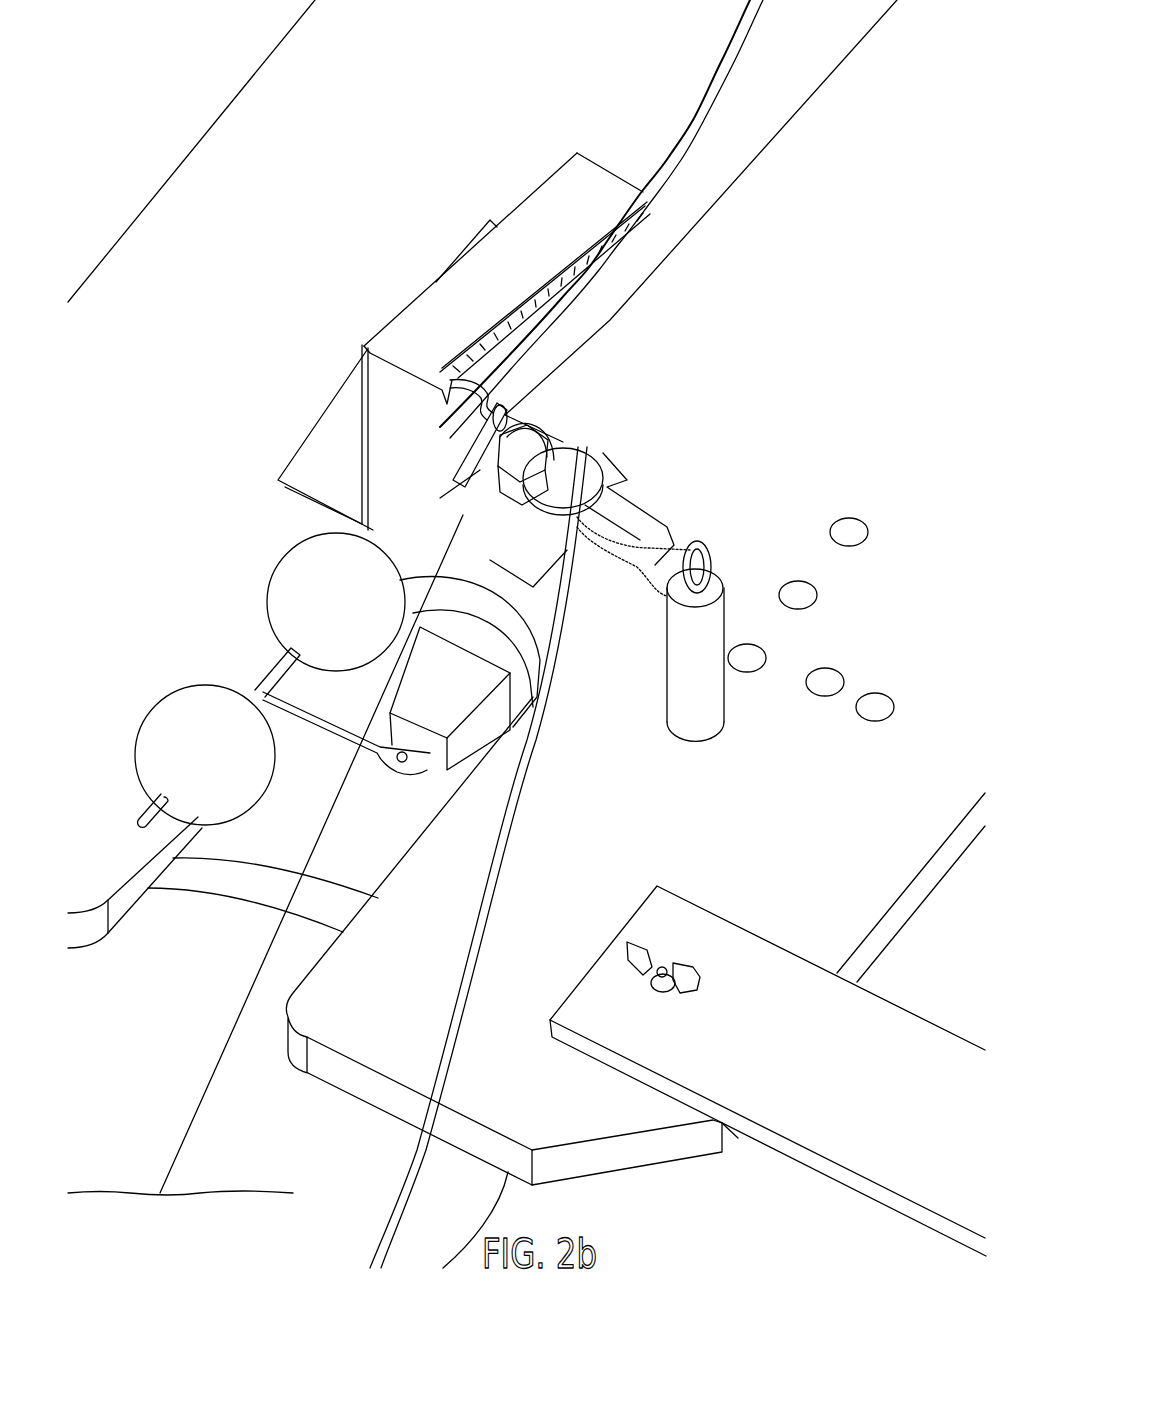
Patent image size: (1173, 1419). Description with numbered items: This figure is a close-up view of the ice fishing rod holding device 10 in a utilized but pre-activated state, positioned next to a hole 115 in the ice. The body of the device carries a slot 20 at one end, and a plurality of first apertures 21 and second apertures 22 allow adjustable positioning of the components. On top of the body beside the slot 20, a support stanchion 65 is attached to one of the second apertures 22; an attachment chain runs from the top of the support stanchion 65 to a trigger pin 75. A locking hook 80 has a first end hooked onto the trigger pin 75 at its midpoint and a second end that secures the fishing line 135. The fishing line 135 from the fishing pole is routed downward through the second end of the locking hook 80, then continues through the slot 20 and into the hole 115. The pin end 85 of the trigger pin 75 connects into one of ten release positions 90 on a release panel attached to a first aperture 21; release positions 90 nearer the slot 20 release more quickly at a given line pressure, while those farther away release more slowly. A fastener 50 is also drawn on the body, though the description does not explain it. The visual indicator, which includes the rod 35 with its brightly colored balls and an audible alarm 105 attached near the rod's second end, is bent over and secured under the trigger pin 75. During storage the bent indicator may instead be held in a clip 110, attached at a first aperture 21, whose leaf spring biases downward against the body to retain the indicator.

The ice fishing rod holding device 10 is at (171, 171).
The slot 20 is at (368, 857).
The first apertures 21 is at (830, 676).
The second apertures 22 is at (852, 535).
The rod 35 is at (693, 122).
The fastener 50 is at (667, 987).
The support stanchion 65 is at (703, 635).
The trigger pin 75 is at (540, 437).
The locking hook 80 is at (447, 470).
The pin end 85 is at (442, 380).
The release positions 90 is at (462, 360).
The audible alarm 105 is at (447, 685).
The clip 110 is at (450, 513).
The hole 115 is at (143, 1044).
The fishing line 135 is at (780, 128).